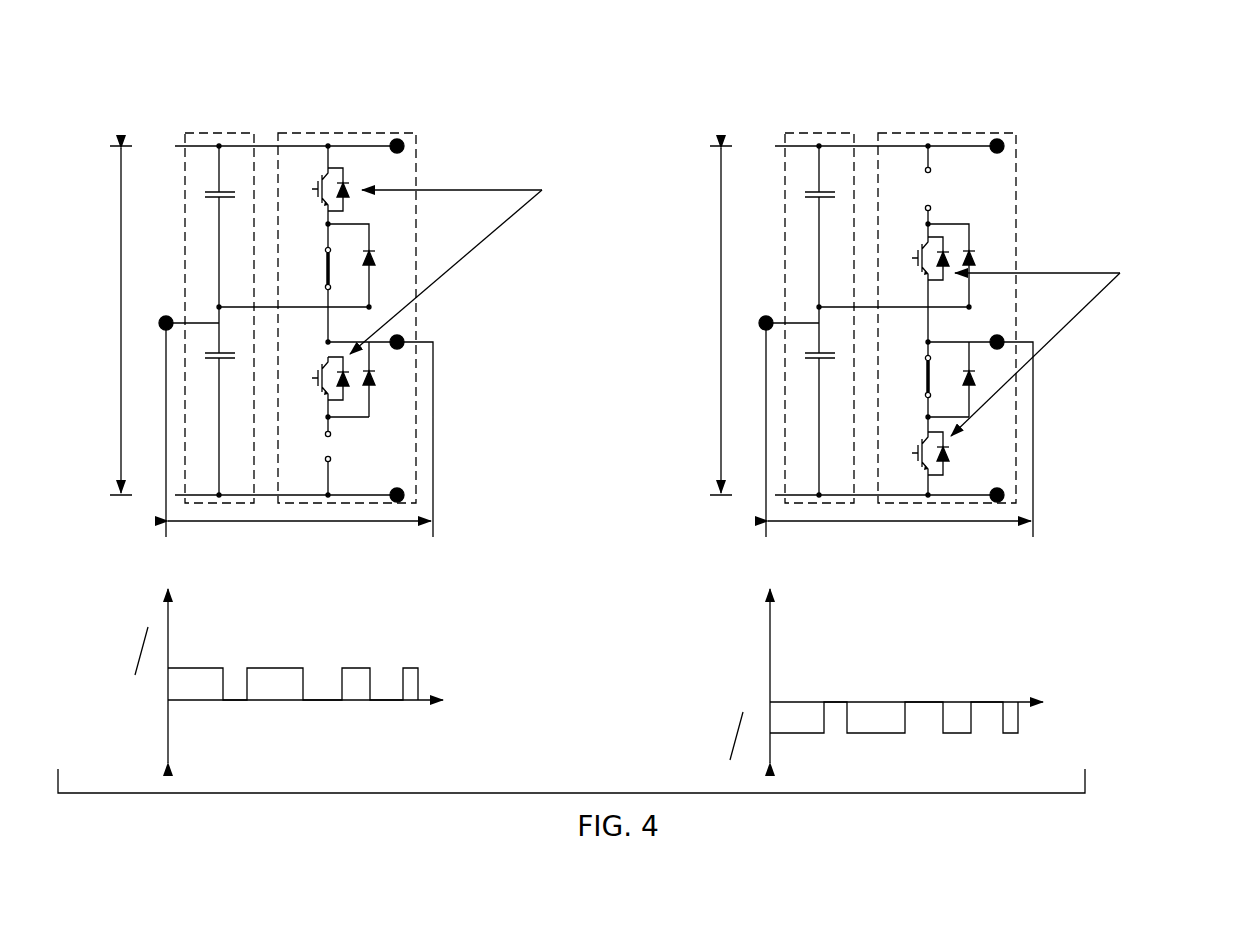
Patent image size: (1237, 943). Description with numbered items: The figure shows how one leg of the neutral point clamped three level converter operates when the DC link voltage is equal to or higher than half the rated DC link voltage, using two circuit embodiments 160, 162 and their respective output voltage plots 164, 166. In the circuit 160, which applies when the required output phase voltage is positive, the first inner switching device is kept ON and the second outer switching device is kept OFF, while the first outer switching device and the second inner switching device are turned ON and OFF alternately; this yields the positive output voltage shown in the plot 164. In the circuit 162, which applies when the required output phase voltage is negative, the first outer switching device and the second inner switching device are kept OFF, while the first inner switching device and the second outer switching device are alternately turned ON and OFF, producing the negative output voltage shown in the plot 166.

The circuit 160 is at (465, 135).
The circuit 162 is at (1065, 135).
The plot 164 is at (436, 608).
The plot 166 is at (1038, 608).